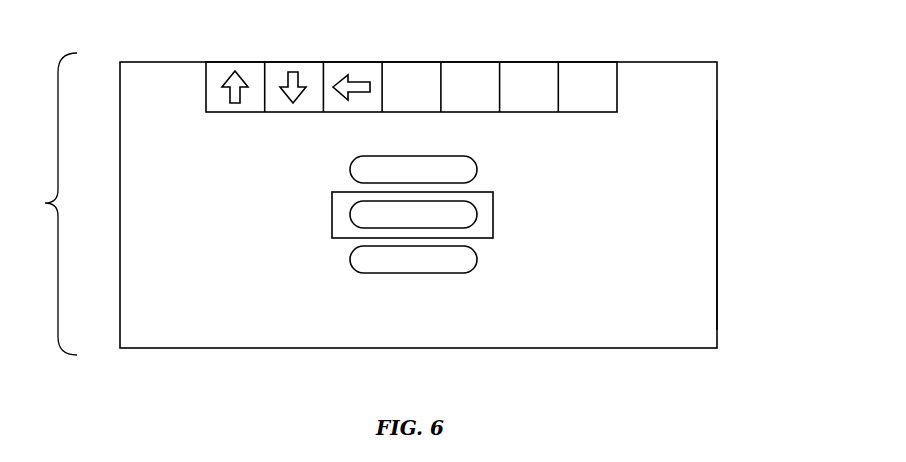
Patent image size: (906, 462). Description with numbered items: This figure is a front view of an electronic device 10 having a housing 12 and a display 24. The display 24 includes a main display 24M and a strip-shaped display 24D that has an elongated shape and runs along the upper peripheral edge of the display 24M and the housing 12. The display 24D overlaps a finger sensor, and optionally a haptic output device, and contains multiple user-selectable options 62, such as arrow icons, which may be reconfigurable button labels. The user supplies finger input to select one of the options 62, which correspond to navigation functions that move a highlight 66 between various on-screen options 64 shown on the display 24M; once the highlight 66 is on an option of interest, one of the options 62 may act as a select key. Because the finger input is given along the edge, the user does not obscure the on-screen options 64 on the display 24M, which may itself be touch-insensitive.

The device 10 is at (49, 204).
The housing 12 is at (200, 348).
The display 24 is at (740, 173).
The display 24D is at (630, 78).
The display 24M is at (717, 225).
The user-selectable options 62 is at (237, 112).
The on-screen options 64 is at (477, 170).
The highlight 66 is at (493, 207).